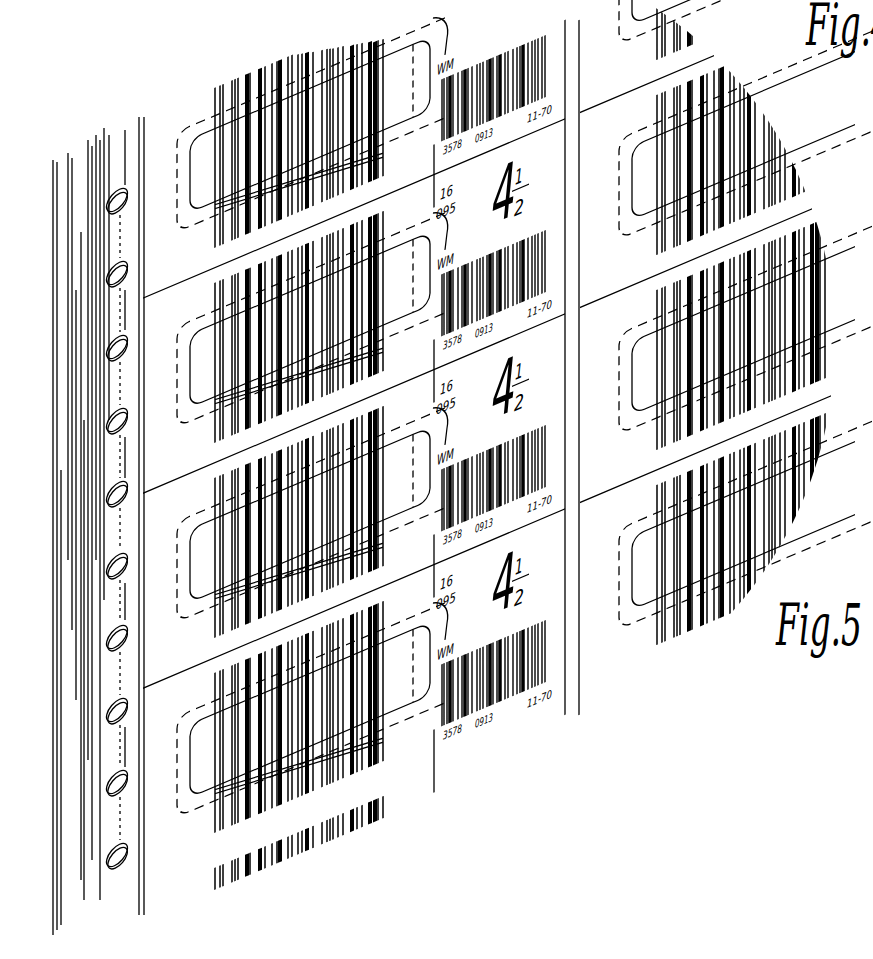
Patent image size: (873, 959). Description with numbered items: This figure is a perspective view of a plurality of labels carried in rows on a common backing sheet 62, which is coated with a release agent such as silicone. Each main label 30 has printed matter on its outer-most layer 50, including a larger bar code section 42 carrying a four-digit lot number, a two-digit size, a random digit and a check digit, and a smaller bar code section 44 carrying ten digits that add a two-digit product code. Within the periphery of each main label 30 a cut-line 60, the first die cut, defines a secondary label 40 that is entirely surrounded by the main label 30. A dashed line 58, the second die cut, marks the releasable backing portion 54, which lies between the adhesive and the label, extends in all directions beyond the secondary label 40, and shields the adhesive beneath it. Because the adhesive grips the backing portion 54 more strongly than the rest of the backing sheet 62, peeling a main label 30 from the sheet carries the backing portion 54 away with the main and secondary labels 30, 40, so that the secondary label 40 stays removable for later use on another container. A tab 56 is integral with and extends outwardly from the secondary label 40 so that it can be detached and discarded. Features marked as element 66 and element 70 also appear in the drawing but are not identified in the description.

The main label 30 is at (290, 47).
The secondary label 40 is at (332, 55).
The bar code section 42 is at (377, 55).
The bar code section 44 is at (484, 61).
The outer-most layer 50 is at (157, 138).
The releasable backing portion 54 is at (178, 112).
The tab 56 is at (423, 44).
The dashed line 58 is at (207, 118).
The cut-line 60 is at (410, 44).
The backing sheet 62 is at (119, 130).
The hinge 66 is at (412, 118).
The feed hole 70 is at (104, 203).